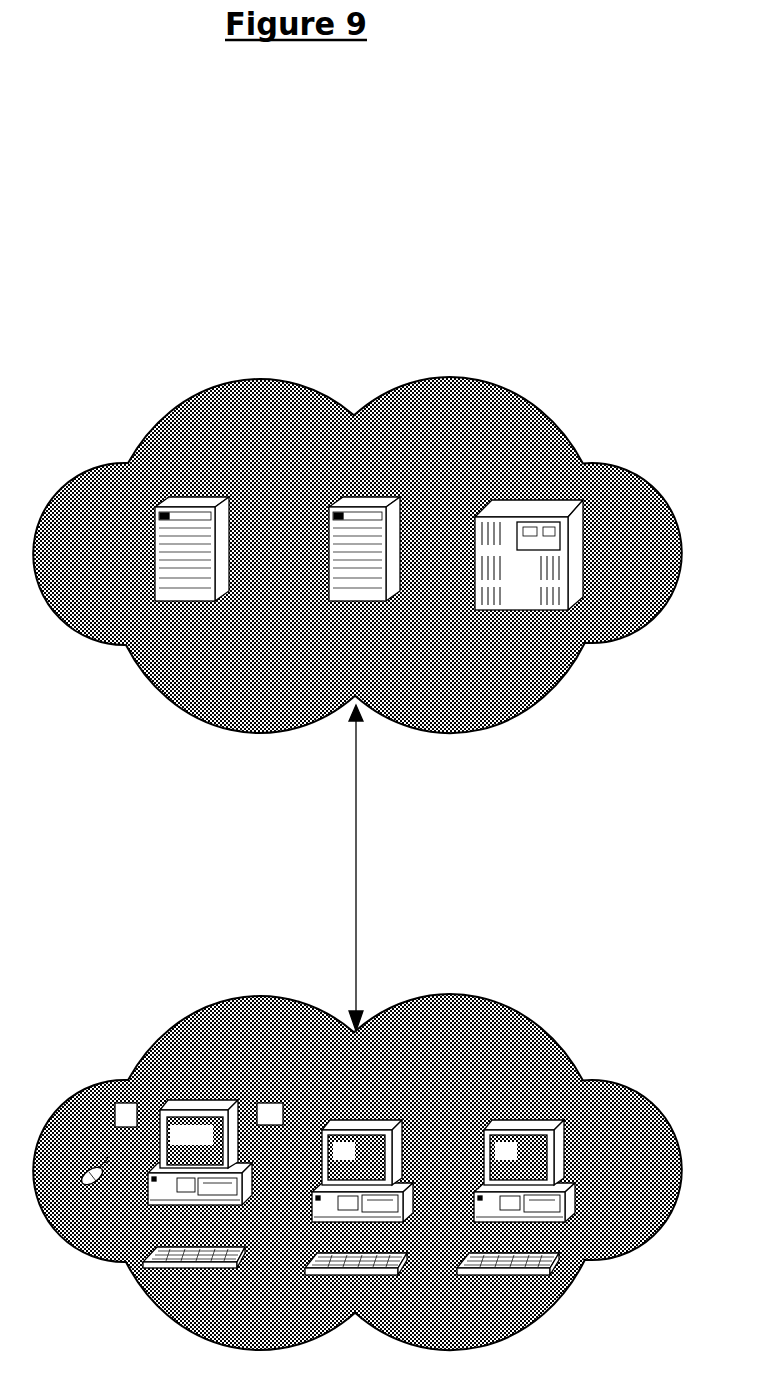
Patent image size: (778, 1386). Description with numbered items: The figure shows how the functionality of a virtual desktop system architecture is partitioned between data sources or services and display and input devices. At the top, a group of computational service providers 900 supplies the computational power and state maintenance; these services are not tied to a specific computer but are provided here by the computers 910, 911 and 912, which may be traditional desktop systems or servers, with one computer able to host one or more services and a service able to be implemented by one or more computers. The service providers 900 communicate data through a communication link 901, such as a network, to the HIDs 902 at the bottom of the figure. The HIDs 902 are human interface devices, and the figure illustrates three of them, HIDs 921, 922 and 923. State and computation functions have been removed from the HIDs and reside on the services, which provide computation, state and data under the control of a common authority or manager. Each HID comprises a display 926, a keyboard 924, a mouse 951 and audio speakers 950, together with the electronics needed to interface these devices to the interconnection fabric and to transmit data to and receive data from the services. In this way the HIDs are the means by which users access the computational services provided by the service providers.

The computational service providers 900 is at (357, 555).
The communication link 901 is at (376, 868).
The HIDs 902 is at (356, 1172).
The computer 910 is at (192, 565).
The computer 911 is at (364, 565).
The computer 912 is at (529, 570).
The HID 921 is at (200, 1167).
The HID 922 is at (359, 1197).
The HID 923 is at (516, 1197).
The keyboard 924 is at (194, 1273).
The display 926 is at (199, 1134).
The audio speakers 950 is at (107, 1116).
The mouse 951 is at (93, 1184).